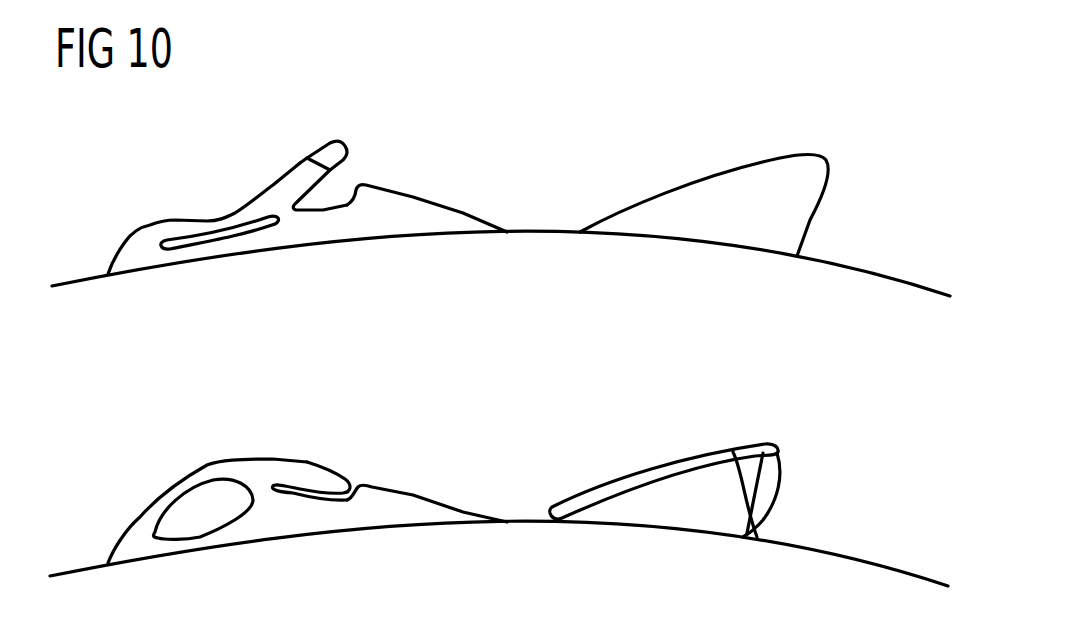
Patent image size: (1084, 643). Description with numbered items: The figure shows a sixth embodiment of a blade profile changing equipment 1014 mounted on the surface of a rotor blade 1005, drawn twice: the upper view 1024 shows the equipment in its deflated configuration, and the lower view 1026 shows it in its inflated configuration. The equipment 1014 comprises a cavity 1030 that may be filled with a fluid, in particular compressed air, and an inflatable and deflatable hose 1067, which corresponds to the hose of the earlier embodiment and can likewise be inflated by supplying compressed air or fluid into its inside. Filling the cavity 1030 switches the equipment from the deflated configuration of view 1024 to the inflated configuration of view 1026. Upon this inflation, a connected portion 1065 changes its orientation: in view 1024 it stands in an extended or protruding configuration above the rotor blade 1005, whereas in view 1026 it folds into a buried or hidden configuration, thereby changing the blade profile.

The rotor blade 1005 is at (73, 288).
The blade profile changing equipment 1014 is at (437, 228).
The connected portion 1065 is at (303, 157).
The inflatable and deflatable hose 1067 is at (257, 237).
The cavity 1030 is at (224, 515).
The view of deflated configuration 1024 is at (860, 112).
The view of inflated configuration 1026 is at (860, 462).